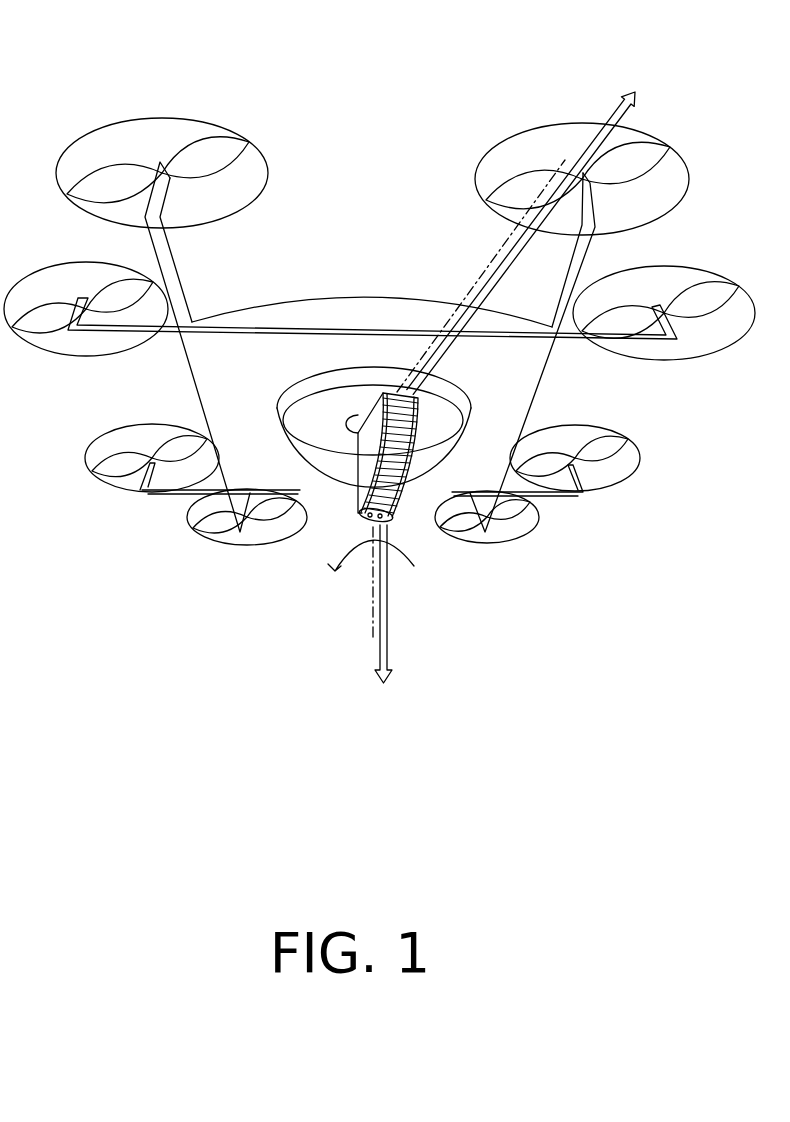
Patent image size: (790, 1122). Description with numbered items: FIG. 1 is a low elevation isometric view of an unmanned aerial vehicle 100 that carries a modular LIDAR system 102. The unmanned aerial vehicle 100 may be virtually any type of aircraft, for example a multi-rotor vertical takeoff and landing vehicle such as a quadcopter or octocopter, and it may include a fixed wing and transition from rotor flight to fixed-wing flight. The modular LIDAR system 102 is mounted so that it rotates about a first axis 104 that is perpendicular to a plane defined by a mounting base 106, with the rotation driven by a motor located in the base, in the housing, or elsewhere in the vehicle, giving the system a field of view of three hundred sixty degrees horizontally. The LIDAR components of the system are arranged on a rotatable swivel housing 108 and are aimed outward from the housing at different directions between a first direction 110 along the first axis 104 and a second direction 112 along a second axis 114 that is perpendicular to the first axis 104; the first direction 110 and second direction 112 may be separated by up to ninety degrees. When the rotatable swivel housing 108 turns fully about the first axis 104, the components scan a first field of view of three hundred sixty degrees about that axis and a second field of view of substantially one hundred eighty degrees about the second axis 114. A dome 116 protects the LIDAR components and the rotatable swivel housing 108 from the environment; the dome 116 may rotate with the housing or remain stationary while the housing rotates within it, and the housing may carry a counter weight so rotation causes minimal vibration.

The unmanned aerial vehicle 100 is at (148, 50).
The modular LIDAR system 102 is at (338, 365).
The first axis 104 is at (372, 617).
The mounting base 106 is at (373, 366).
The rotatable swivel housing 108 is at (347, 488).
The first direction 110 is at (380, 663).
The second direction 112 is at (620, 103).
The second axis 114 is at (503, 243).
The dome 116 is at (408, 527).